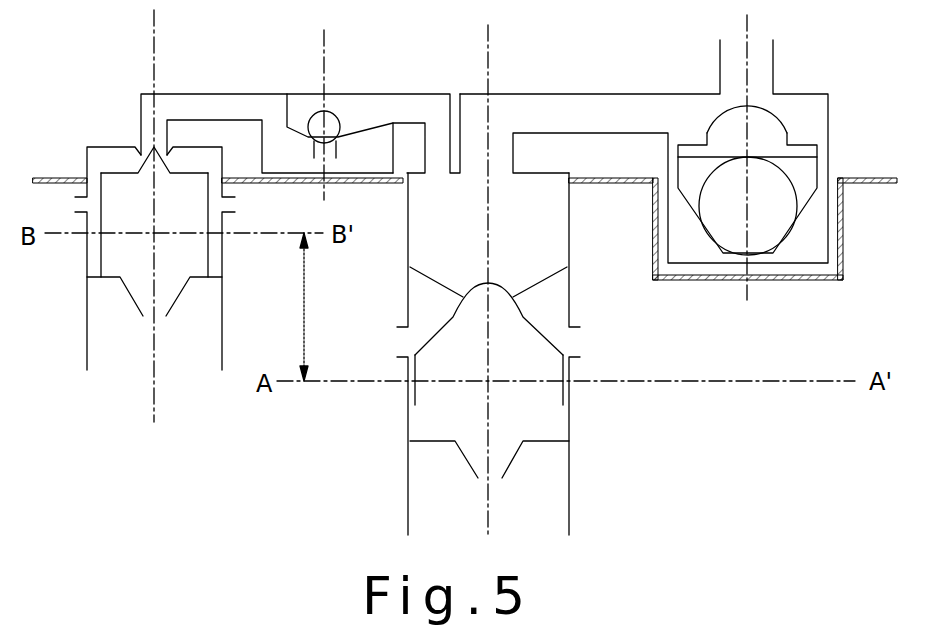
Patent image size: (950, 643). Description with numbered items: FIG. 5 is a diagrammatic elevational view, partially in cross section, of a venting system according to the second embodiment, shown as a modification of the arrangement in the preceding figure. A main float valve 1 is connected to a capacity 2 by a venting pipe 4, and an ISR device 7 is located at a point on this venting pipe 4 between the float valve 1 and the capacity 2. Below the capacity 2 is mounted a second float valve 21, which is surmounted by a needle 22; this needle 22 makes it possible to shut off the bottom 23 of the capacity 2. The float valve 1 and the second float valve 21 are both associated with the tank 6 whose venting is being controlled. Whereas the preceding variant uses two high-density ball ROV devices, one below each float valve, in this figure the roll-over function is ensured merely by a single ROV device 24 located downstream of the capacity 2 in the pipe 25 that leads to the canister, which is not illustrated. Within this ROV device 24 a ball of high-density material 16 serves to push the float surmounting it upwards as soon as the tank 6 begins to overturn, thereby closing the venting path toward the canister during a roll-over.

The float valve 1 is at (75, 317).
The capacity 2 is at (580, 267).
The venting pipe 4 is at (192, 107).
The tank 6 is at (155, 346).
The ISR device 7 is at (297, 103).
The balls of high-density material 16 is at (777, 223).
The second float valve 21 is at (548, 397).
The needle 22 is at (497, 282).
The bottom 23 is at (540, 285).
The ROV device 24 is at (767, 128).
The pipe 25 is at (580, 120).